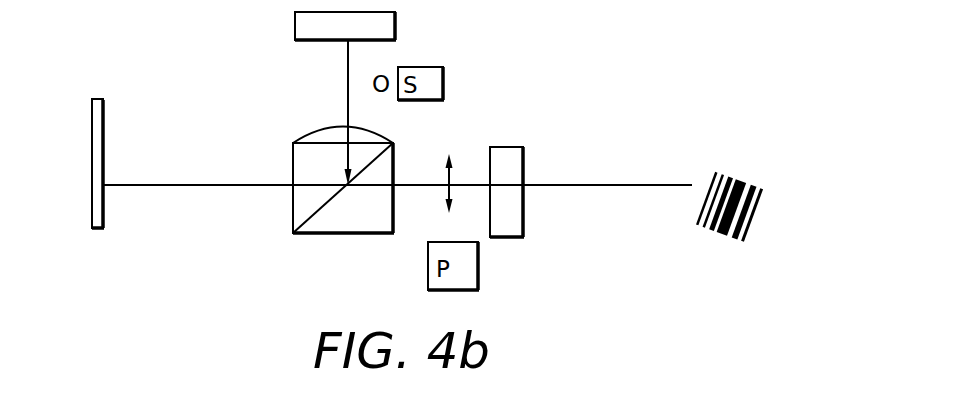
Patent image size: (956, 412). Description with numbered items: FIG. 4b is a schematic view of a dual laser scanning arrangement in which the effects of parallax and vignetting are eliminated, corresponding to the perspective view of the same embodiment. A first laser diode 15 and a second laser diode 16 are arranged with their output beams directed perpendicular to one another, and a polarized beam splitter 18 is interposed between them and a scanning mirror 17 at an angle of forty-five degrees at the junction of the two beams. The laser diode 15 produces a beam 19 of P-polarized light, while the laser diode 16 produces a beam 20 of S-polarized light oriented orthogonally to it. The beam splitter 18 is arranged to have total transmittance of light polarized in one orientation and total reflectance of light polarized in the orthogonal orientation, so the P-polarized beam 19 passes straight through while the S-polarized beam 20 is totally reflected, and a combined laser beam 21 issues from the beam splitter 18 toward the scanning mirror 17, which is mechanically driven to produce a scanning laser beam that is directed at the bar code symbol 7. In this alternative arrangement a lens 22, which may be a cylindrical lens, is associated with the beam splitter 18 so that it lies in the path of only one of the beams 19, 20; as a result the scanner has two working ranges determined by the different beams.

The bar code symbol 7 is at (745, 178).
The first laser diode 15 is at (525, 170).
The second laser diode 16 is at (397, 22).
The scanning mirror 17 is at (105, 222).
The polarized beam splitter 18 is at (293, 227).
The P-polarized light beam 19 is at (463, 190).
The S-polarized light beam 20 is at (345, 84).
The combined laser beam 21 is at (180, 182).
The lens 22 is at (307, 135).